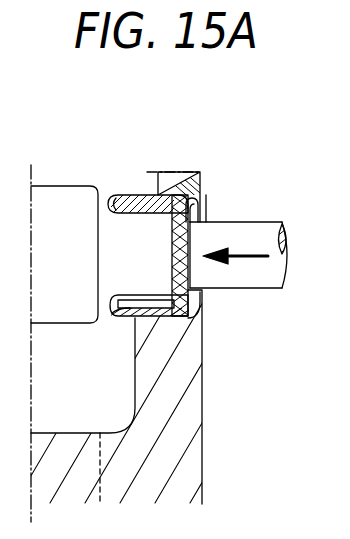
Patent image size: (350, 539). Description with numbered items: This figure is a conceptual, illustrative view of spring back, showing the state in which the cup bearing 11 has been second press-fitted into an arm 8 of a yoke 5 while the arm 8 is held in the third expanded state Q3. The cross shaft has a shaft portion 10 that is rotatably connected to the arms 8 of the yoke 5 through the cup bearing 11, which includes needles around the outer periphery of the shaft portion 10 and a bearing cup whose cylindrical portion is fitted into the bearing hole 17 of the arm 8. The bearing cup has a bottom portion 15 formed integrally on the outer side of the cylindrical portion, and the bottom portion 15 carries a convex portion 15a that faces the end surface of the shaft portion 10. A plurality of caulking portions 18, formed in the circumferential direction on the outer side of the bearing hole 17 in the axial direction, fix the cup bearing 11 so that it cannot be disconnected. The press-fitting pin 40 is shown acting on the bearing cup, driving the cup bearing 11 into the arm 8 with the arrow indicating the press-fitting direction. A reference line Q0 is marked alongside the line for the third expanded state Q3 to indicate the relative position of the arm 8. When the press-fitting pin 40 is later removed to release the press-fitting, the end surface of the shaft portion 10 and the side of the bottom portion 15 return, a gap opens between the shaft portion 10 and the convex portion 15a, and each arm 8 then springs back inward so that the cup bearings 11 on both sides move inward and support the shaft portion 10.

The yoke 5 is at (207, 447).
The arm 8 is at (174, 367).
The shaft portion 10 is at (129, 226).
The cup bearing 11 is at (183, 183).
The bottom portion 15 is at (206, 290).
The convex portion 15a is at (195, 265).
The bearing hole 17 is at (135, 315).
The caulking portion 18 is at (204, 198).
The press-fitting pin 40 is at (225, 231).
The reference position Q0 is at (147, 222).
The third expanded state Q3 is at (135, 318).